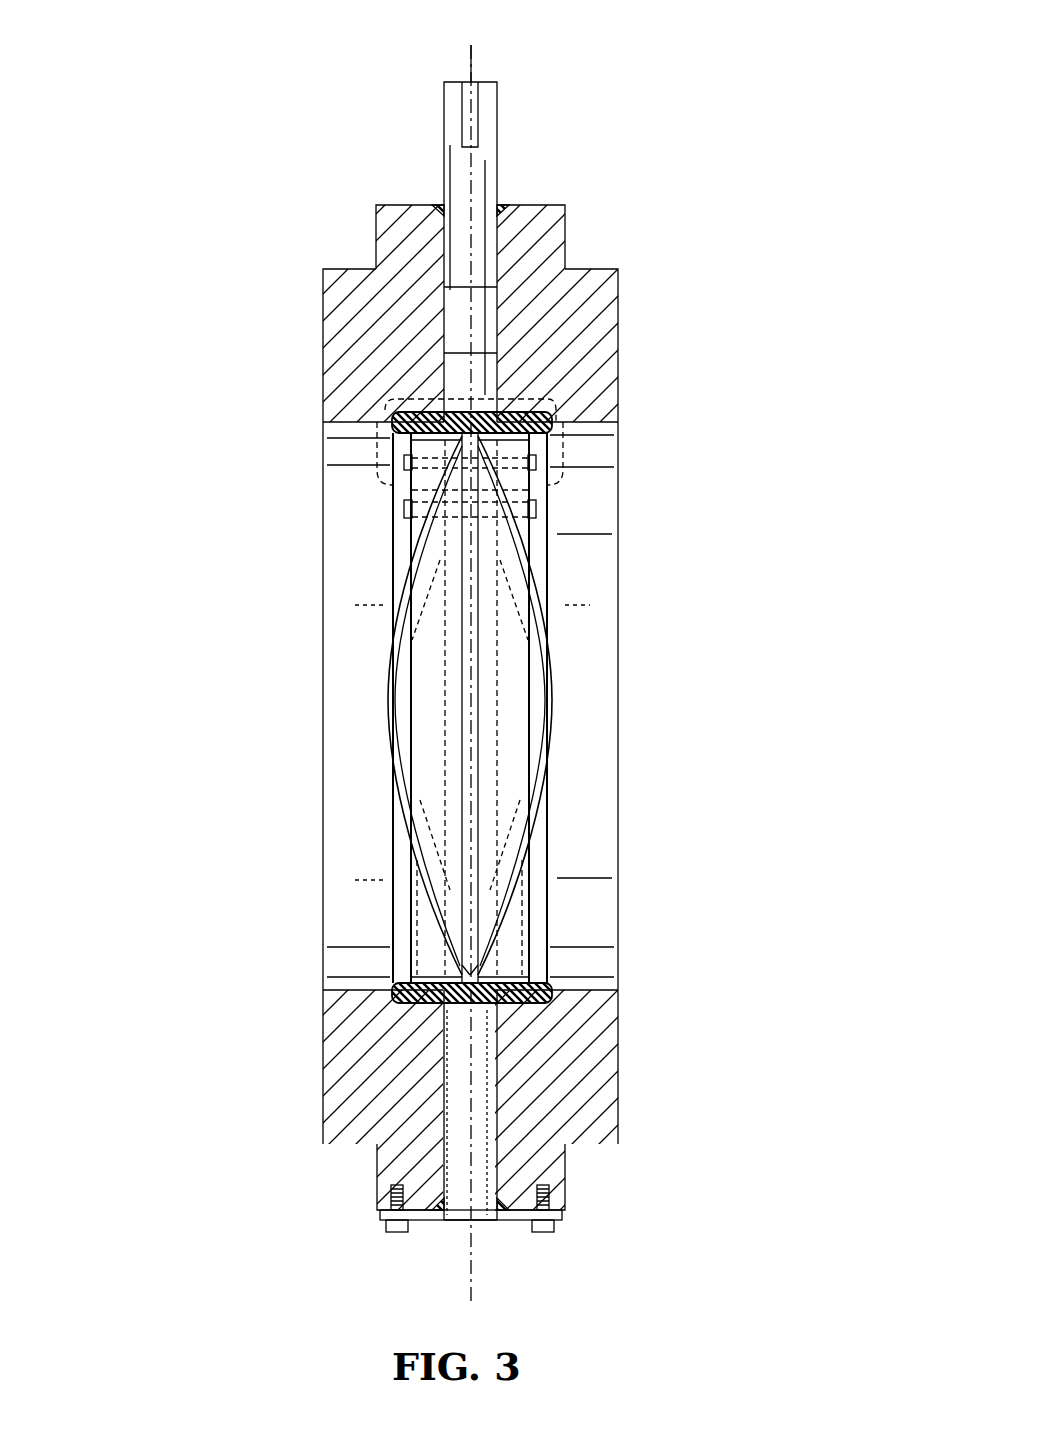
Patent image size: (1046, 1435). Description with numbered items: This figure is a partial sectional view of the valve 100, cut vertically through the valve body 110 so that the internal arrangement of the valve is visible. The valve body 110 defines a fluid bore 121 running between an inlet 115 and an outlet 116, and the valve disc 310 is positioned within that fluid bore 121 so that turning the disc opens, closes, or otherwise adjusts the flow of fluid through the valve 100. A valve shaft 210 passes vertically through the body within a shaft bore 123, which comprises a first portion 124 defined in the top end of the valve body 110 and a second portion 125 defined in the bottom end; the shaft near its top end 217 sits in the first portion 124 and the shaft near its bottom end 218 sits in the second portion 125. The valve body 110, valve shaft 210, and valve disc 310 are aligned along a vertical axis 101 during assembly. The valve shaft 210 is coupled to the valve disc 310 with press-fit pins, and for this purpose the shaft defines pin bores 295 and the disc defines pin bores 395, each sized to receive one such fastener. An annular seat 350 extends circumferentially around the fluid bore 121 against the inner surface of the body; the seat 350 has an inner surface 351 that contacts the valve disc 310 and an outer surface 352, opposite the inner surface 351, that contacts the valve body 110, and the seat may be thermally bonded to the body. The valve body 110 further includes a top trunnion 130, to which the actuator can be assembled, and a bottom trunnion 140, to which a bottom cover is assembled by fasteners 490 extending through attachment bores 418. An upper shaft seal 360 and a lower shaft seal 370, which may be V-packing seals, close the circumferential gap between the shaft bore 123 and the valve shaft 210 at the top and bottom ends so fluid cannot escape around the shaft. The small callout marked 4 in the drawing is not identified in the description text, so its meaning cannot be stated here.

The valve 100 is at (347, 140).
The vertical axis 101 is at (471, 72).
The valve body 110 is at (618, 353).
The inlet 115 is at (323, 985).
The outlet 116 is at (617, 990).
The fluid bore 121 is at (340, 780).
The shaft bore 123 is at (497, 287).
The first portion 124 is at (497, 353).
The second portion 125 is at (447, 1062).
The top trunnion 130 is at (376, 245).
The bottom trunnion 140 is at (377, 1160).
The valve shaft 210 is at (497, 122).
The top end 217 is at (460, 88).
The bottom end 218 is at (453, 1215).
The pin bore 295 is at (455, 456).
The valve disc 310 is at (529, 908).
The seat 350 is at (548, 427).
The inner surface 351 is at (507, 968).
The outer surface 352 is at (512, 1008).
The upper shaft seal 360 is at (500, 212).
The lower shaft seal 370 is at (505, 1195).
The pin bore 395 is at (533, 488).
The detail reference 4 is at (553, 418).
The attachment bore 418 is at (540, 1218).
The fastener 490 is at (545, 1232).